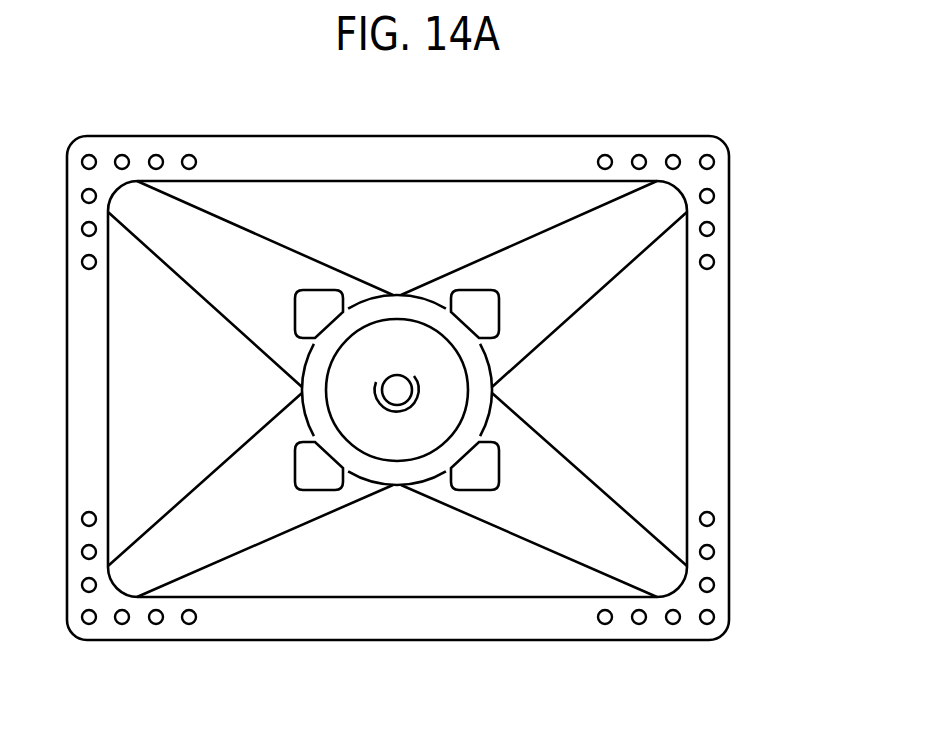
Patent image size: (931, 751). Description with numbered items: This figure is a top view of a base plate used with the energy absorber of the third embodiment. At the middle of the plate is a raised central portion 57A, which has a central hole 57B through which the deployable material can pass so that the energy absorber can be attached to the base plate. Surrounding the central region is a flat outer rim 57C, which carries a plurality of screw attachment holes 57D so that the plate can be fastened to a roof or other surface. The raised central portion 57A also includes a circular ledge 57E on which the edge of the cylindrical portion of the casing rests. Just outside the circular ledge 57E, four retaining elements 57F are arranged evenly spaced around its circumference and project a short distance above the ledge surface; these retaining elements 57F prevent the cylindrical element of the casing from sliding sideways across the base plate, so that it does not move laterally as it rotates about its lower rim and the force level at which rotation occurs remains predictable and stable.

The raised central portion 57A is at (342, 405).
The central hole 57B is at (395, 380).
The flat outer rim 57C is at (718, 298).
The screw attachment holes 57D is at (713, 587).
The circular ledge 57E is at (417, 472).
The retaining elements 57F is at (304, 303).